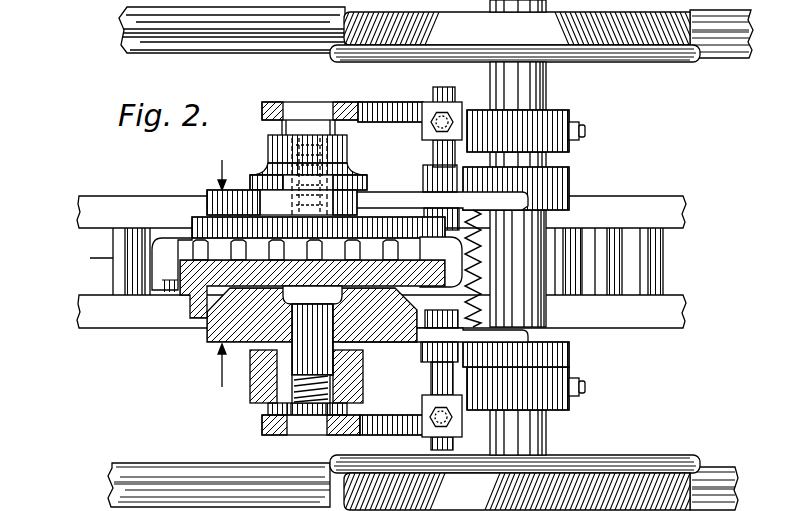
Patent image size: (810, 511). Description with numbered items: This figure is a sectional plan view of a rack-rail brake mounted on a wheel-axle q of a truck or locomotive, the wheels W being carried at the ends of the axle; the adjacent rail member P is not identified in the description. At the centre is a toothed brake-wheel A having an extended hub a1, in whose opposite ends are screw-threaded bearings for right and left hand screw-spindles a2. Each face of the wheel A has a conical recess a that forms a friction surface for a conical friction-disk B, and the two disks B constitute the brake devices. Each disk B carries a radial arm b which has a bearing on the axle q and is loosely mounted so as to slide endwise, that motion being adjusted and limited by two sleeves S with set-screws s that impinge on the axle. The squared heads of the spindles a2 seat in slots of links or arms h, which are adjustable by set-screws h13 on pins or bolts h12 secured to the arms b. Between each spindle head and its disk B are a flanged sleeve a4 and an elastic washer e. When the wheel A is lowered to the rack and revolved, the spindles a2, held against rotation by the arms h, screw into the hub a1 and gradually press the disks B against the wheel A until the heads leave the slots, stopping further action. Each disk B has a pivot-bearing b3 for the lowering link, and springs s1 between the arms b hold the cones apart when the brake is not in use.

The wheels W is at (607, 64).
The frame rail P is at (609, 207).
The wheel-axle q is at (508, 262).
The sleeves S is at (564, 112).
The set-screws s is at (580, 130).
The springs s1 is at (477, 307).
The radial arms b is at (399, 201).
The links or arms h is at (397, 108).
The pins or bolts h12 is at (458, 91).
The set-screws h13 is at (418, 440).
The flanged sleeve a4 is at (348, 150).
The elastic washer e is at (257, 186).
The conical friction-disks B is at (213, 197).
The pivot-bearing b3 is at (287, 198).
The toothed brake-wheel A is at (195, 222).
The conical recess a is at (190, 300).
The extended hub a1 is at (316, 291).
The screw-spindles a2 is at (294, 147).